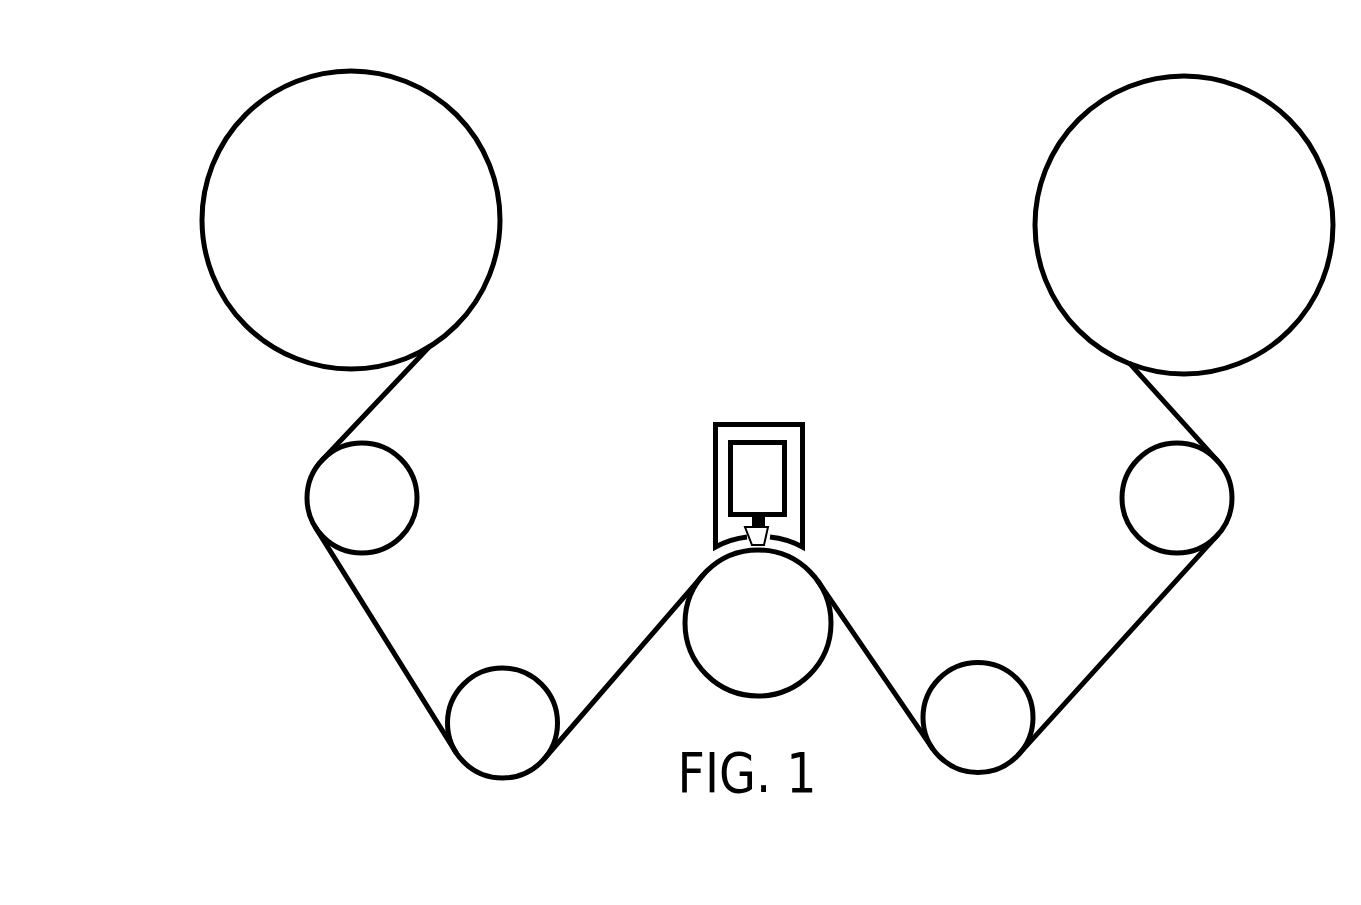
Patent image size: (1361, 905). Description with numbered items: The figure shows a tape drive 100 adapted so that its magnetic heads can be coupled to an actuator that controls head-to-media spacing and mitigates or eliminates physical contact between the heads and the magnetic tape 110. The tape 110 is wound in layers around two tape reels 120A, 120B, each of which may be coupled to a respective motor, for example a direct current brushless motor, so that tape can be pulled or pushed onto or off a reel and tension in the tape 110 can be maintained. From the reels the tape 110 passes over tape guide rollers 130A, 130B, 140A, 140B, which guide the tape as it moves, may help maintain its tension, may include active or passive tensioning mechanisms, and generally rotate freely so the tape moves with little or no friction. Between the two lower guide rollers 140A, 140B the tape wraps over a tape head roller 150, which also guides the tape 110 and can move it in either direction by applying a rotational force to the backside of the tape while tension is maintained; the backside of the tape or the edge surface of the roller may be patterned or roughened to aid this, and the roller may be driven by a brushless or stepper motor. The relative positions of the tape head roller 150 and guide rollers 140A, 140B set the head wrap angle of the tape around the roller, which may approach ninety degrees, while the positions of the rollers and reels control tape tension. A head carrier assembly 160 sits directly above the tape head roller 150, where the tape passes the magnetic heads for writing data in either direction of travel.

The tape drive 100 is at (718, 105).
The magnetic tape 110 is at (390, 647).
The tape reel 120A is at (351, 220).
The tape reel 120B is at (1184, 225).
The tape guide roller 130A is at (362, 498).
The tape guide roller 130B is at (1177, 498).
The tape guide roller 140A is at (503, 723).
The tape guide roller 140B is at (978, 718).
The tape head roller 150 is at (758, 623).
The head carrier assembly 160 is at (760, 421).